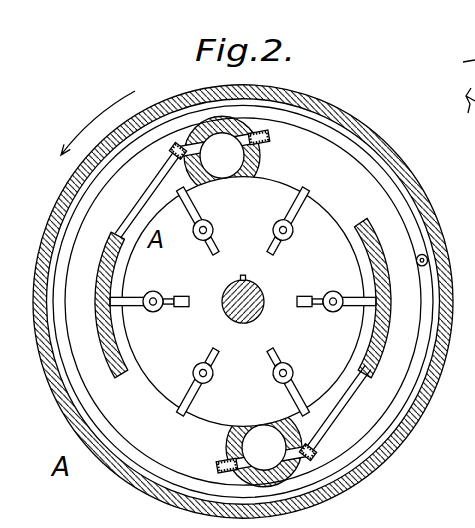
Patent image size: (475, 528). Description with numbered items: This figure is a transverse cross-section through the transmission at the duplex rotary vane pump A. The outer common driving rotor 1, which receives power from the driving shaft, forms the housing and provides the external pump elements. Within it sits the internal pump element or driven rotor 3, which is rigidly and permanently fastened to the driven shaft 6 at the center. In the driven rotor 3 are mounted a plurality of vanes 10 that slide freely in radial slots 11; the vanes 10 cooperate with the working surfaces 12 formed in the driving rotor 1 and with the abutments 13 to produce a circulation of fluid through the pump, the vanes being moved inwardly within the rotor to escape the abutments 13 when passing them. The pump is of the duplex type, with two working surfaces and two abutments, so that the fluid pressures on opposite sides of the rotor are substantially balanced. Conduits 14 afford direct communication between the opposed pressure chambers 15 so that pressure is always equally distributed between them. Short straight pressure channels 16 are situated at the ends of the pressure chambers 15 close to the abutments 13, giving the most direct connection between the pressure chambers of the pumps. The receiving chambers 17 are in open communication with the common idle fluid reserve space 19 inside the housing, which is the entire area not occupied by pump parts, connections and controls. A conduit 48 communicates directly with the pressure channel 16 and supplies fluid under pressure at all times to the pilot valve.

The rotor 1 is at (243, 301).
The driven rotor 3 is at (243, 302).
The driven shaft 6 is at (243, 310).
The vanes 10 is at (243, 306).
The radial slots 11 is at (307, 320).
The working surfaces 12 is at (101, 305).
The abutments 13 is at (243, 301).
The conduits 14 is at (232, 299).
The pressure chambers 15 is at (243, 301).
The pressure channels 16 is at (243, 286).
The receiving chambers 17 is at (233, 294).
The fluid reserve space 19 is at (243, 301).
The conduit 48 is at (411, 282).